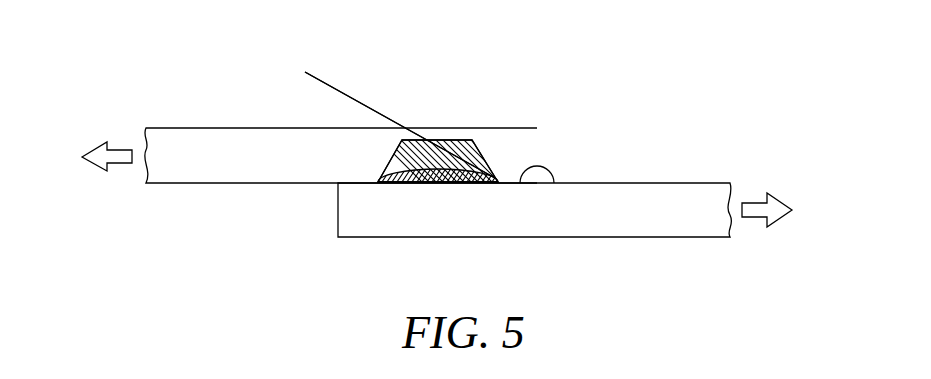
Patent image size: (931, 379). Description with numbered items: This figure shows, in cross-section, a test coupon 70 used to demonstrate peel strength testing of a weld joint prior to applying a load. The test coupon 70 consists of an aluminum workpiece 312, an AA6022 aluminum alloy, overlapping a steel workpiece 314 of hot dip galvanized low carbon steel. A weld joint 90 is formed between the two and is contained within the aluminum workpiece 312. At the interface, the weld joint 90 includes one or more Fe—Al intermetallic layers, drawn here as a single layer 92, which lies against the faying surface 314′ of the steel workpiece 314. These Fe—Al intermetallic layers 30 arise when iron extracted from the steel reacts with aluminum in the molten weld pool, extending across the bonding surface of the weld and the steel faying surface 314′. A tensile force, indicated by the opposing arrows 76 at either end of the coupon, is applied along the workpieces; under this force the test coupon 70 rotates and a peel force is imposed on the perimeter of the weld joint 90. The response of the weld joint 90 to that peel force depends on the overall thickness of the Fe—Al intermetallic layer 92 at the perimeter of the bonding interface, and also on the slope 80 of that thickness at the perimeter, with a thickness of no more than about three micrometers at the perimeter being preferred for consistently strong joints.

The aluminum workpiece 312 is at (180, 127).
The steel workpiece 314 is at (658, 200).
The faying surface of the steel workpiece 314′ is at (554, 183).
The test coupon 70 is at (473, 110).
The Fe—Al intermetallic layer 92 is at (460, 162).
The slope of the overall thickness of the Fe—Al intermetallic layer 80 is at (328, 82).
The weld joint 90 is at (385, 157).
The Fe—Al intermetallic layers 30 is at (440, 183).
The opposing arrows indicating tensile force 76 is at (121, 143).